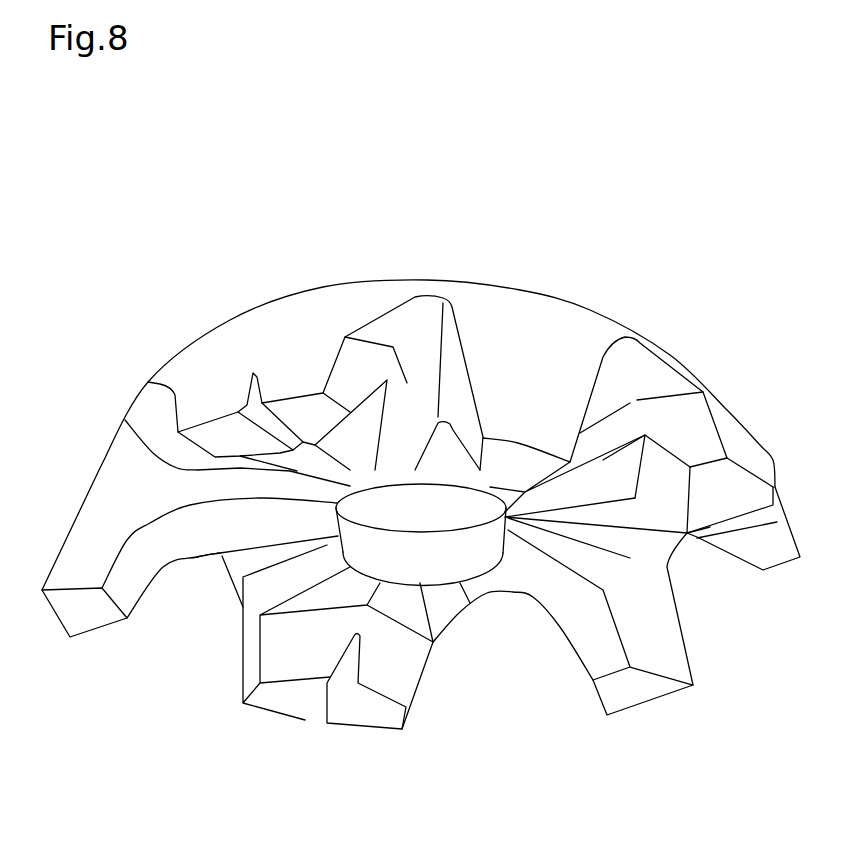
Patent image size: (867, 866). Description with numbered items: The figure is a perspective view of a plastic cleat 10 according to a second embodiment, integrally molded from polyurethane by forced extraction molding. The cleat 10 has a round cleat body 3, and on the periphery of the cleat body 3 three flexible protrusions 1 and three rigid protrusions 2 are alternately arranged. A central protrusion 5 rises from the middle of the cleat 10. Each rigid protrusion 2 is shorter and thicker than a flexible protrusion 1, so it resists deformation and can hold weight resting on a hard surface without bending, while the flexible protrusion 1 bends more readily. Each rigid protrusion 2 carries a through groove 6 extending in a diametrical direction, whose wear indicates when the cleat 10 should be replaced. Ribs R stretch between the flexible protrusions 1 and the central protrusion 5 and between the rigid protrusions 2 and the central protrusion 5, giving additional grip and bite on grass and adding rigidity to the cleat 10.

The cleat 10 is at (557, 287).
The flexible protrusion 1 is at (632, 702).
The rigid protrusion 2 is at (743, 437).
The cleat body 3 is at (275, 320).
The central protrusion 5 is at (447, 570).
The through groove 6 is at (318, 712).
The rib R is at (217, 533).